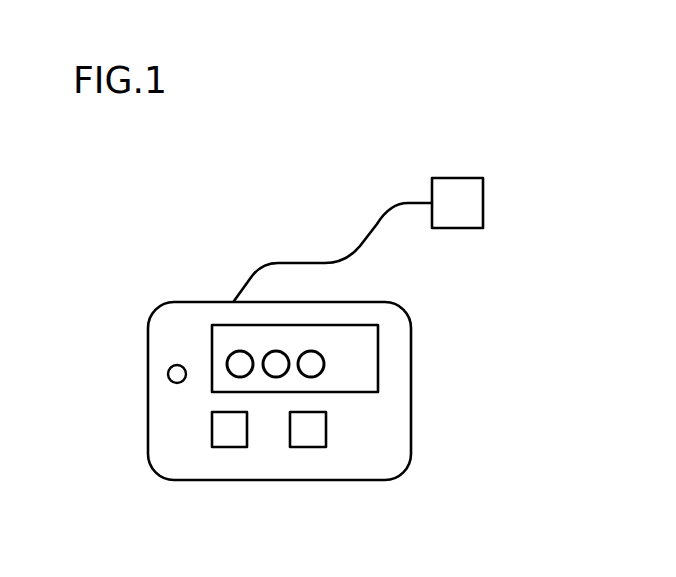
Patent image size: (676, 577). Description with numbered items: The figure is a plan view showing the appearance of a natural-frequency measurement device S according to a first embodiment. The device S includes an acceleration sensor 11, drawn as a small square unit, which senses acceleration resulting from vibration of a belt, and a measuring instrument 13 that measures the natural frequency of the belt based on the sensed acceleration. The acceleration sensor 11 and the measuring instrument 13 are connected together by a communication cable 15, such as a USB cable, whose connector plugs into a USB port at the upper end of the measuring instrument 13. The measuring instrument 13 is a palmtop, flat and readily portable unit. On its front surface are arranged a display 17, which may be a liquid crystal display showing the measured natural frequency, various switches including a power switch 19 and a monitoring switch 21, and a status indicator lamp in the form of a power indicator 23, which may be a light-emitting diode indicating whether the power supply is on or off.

The natural-frequency measurement device S is at (150, 235).
The acceleration sensor 11 is at (458, 178).
The measuring instrument 13 is at (148, 357).
The communication cable 15 is at (310, 263).
The display 17 is at (378, 352).
The power switch 19 is at (306, 447).
The monitoring switch 21 is at (226, 447).
The power indicator 23 is at (175, 383).